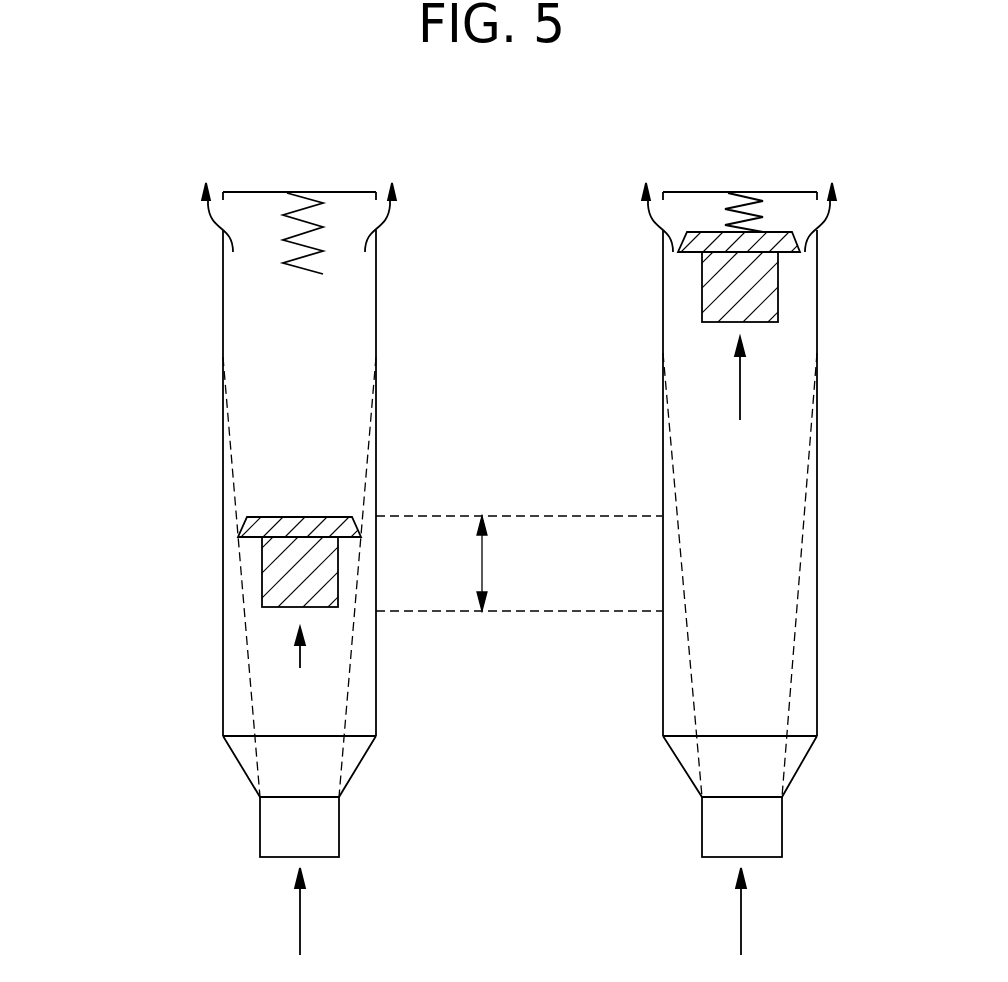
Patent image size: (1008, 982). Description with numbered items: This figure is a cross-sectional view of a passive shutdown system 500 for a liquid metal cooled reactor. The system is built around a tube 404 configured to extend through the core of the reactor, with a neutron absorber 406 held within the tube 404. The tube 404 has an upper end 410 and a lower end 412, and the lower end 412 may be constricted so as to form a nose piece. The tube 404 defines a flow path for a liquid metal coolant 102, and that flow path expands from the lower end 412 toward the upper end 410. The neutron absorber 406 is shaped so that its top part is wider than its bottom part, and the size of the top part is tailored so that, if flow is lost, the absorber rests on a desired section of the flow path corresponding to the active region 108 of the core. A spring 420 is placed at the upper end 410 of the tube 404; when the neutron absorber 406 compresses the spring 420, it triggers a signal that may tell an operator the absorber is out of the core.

The passive shutdown system 500 is at (543, 117).
The upper end 410 is at (182, 233).
The spring 420 is at (285, 215).
The tube 404 is at (223, 402).
The neutron absorber 406 is at (283, 567).
The active region 108 is at (579, 582).
The lower end 412 is at (235, 832).
The liquid metal coolant 102 is at (300, 927).